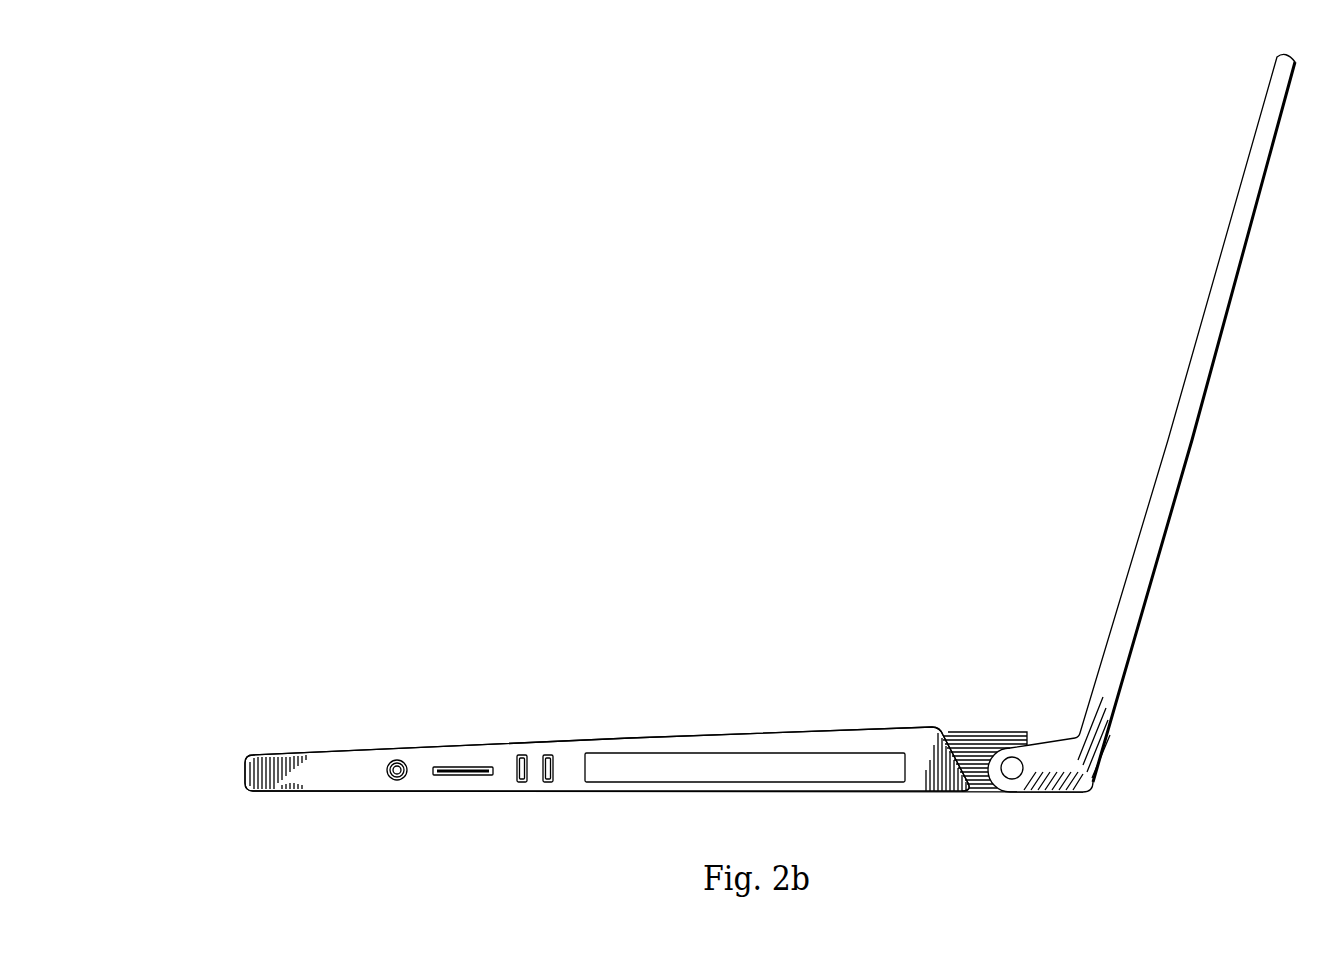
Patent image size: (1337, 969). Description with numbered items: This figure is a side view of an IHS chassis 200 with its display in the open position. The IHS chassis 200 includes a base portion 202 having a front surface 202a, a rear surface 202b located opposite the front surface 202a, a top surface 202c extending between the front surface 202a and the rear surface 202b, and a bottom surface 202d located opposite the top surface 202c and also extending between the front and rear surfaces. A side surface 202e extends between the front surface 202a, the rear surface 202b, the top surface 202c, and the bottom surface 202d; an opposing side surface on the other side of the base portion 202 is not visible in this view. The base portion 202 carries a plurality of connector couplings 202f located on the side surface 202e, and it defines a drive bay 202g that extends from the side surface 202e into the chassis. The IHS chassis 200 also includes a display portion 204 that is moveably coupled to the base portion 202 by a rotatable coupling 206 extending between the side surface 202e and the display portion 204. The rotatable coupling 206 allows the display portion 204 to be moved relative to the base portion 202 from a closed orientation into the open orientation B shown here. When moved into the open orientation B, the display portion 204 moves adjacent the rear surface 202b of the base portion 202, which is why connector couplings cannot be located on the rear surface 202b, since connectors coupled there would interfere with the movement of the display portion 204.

The IHS chassis 200 is at (517, 575).
The base portion 202 is at (328, 752).
The front surface 202a is at (245, 772).
The rear surface 202b is at (1025, 745).
The top surface 202c is at (625, 733).
The bottom surface 202d is at (677, 793).
The side surface 202e is at (322, 792).
The connector couplings 202f is at (396, 781).
The drive bay 202g is at (788, 762).
The display portion 204 is at (1205, 402).
The rotatable coupling 206 is at (1012, 779).
The open orientation B is at (933, 480).